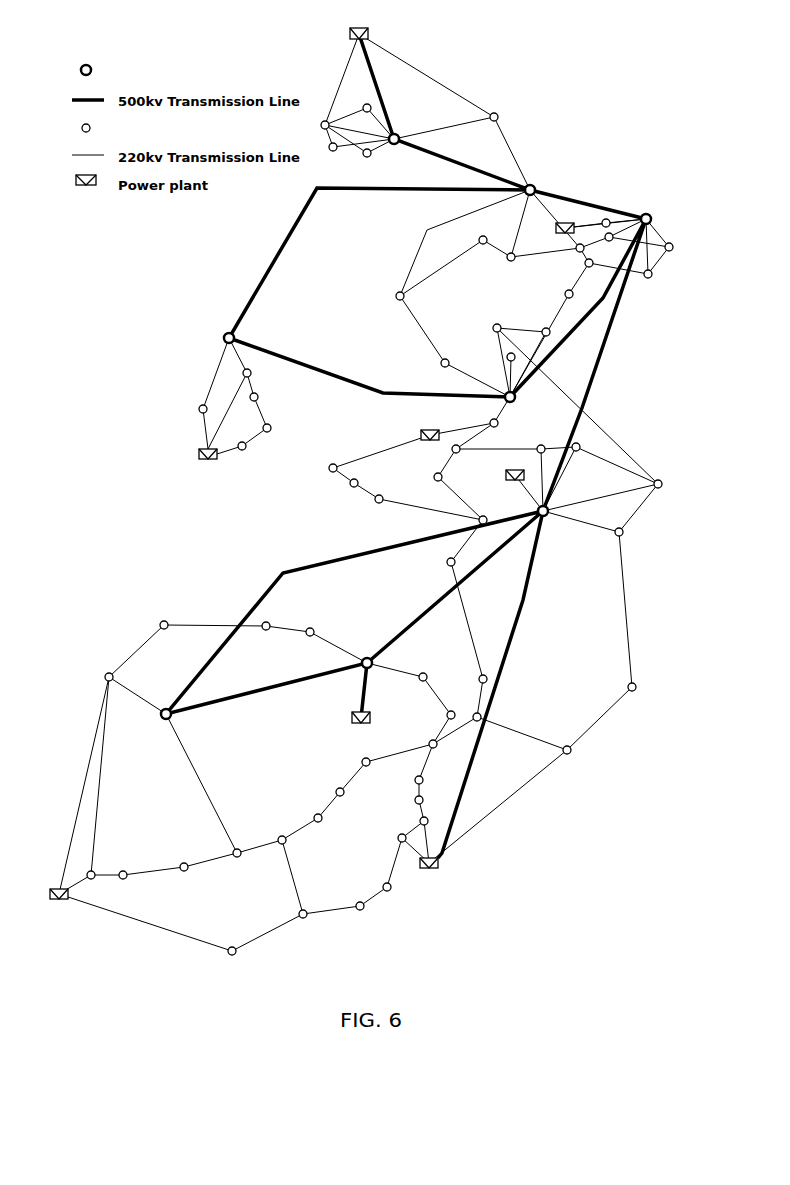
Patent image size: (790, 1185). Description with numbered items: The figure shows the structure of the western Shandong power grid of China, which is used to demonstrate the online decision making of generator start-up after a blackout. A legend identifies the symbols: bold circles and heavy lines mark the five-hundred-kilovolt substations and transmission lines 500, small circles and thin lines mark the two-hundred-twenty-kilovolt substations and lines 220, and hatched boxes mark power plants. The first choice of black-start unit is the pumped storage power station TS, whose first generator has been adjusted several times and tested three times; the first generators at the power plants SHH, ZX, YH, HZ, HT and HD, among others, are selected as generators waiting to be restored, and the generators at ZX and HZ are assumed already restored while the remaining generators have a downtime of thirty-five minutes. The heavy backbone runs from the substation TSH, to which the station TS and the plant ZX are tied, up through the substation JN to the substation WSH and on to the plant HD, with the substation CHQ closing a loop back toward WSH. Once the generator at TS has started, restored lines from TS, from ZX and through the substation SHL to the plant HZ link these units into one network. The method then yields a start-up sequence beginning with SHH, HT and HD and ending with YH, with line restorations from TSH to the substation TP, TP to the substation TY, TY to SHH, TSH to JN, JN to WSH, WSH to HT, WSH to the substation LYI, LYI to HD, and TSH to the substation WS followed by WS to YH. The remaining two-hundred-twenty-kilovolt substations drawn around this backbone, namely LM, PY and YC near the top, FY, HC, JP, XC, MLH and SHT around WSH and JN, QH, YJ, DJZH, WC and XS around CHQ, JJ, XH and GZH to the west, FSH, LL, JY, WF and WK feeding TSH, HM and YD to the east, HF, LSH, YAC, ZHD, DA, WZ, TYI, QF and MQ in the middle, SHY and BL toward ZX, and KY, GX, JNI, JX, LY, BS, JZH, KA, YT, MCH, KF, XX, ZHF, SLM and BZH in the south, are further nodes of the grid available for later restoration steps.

The 500kv substation 500 is at (163, 72).
The 220kv substation 220 is at (164, 130).
The power plant HD is at (357, 25).
The substation WSH is at (546, 184).
The substation JN is at (647, 212).
The CHQ 500kv substation CHQ is at (504, 404).
The substation TSH is at (557, 522).
The substation WS is at (365, 647).
The power plant HT is at (551, 229).
The power plant SHH is at (423, 427).
The pumped storage power station TS is at (514, 467).
The power plant YH is at (357, 726).
The power plant ZX is at (427, 873).
The power plant HZ is at (56, 906).
The LM 220kv substation LM is at (356, 101).
The PY 220kv substation PY is at (308, 126).
The YC 220kv substation YC is at (330, 157).
The substation LYI is at (507, 115).
The FY 220kv substation FY is at (594, 216).
The HC 220kv substation HC is at (605, 245).
The JP 220kv substation JP is at (678, 247).
The XC 220kv substation XC is at (574, 267).
The MLH 220kv substation MLH is at (462, 240).
The SHT 220kv substation SHT is at (497, 266).
The QH 220kv substation QH is at (384, 297).
The YJ 220kv substation YJ is at (556, 293).
The DJZH 220kv substation DJZH is at (486, 319).
The WC 220kv substation WC is at (491, 354).
The XS 220kv substation XS is at (431, 363).
The JJ 220kv substation JJ is at (255, 374).
The XH 220kv substation XH is at (269, 396).
The GZH 220kv substation GZH is at (295, 428).
The FSH 220kv substation FSH is at (312, 470).
The LL 220kv substation LL is at (346, 489).
The JY 220kv substation JY is at (375, 508).
The substation TY is at (440, 453).
The substation TP is at (529, 444).
The WF 220kv substation WF is at (451, 478).
The WK 220kv substation WK is at (489, 513).
The HM 220kv substation HM is at (668, 474).
The YD 220kv substation YD is at (631, 534).
The HF 220kv substation HF is at (436, 563).
The LSH 220kv substation LSH is at (141, 624).
The YAC 220kv substation YAC is at (272, 617).
The ZHD 220kv substation ZHD is at (302, 645).
The substation SHL is at (89, 677).
The DA 220kv substation DA is at (422, 669).
The WZ 220kv substation WZ is at (489, 660).
The TYI 220kv substation TYI is at (433, 714).
The QF 220kv substation QF is at (468, 705).
The MQ 220kv substation MQ is at (419, 736).
The SHY 220kv substation SHY is at (612, 684).
The BL 220kv substation BL is at (580, 756).
The KY 220kv substation KY is at (349, 760).
The GX 220kv substation GX is at (322, 794).
The JNI 220kv substation JNI is at (322, 826).
The JX 220kv substation JX is at (273, 831).
The LY 220kv substation LY is at (431, 776).
The BS 220kv substation BS is at (407, 819).
The JZH 220kv substation JZH is at (385, 844).
The KA 220kv substation KA is at (375, 881).
The YT 220kv substation YT is at (361, 915).
The MCH 220kv substation MCH is at (303, 923).
The KF 220kv substation KF is at (94, 884).
The XX 220kv substation XX is at (119, 865).
The ZHF 220kv substation ZHF is at (174, 875).
The SLM 220kv substation SLM is at (232, 862).
The BZH 220kv substation BZH is at (227, 959).